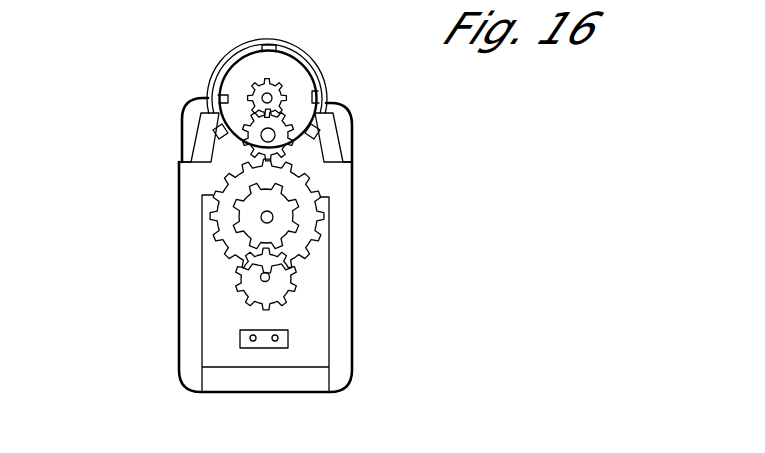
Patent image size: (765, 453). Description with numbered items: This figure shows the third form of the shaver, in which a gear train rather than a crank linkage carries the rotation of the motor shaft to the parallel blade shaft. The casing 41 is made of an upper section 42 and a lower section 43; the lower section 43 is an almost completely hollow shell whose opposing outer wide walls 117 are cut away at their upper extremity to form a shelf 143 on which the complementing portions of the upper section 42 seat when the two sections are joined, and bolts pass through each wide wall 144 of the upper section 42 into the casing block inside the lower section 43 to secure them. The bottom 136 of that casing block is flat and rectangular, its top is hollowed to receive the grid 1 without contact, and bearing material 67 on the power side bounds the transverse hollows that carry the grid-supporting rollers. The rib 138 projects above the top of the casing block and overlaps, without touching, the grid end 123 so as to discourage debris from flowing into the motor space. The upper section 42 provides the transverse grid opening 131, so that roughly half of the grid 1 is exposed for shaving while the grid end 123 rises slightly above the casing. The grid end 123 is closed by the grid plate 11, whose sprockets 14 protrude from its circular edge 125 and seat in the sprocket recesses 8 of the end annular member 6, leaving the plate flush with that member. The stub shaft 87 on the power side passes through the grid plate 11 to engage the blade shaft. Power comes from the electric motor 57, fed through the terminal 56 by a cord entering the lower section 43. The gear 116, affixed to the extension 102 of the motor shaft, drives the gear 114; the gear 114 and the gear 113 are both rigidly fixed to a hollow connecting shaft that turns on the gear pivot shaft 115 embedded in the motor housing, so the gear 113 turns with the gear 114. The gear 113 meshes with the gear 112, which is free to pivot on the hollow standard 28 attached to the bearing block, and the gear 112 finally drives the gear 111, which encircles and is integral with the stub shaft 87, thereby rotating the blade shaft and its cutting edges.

The grid 1 is at (318, 57).
The end annular member 6 is at (221, 66).
The sprocket recesses 8 is at (277, 46).
The grid plate 11 is at (281, 75).
The sprockets 14 is at (248, 94).
The hollow standard 28 is at (274, 130).
The casing 41 is at (170, 160).
The upper section 42 is at (184, 106).
The lower section 43 is at (353, 352).
The terminal 56 is at (282, 352).
The electric motor 57 is at (314, 350).
The bearing material 67 is at (219, 139).
The stub shaft 87 is at (294, 80).
The extension 102 is at (268, 280).
The gear 111 is at (276, 101).
The gear 112 is at (258, 150).
The gear 113 is at (278, 180).
The gear 114 is at (277, 206).
The gear pivot shaft 115 is at (272, 221).
The gear 116 is at (278, 270).
The outer wide walls 117 is at (178, 270).
The grid end 123 is at (328, 71).
The circular edge 125 is at (324, 88).
The transverse grid opening 131 is at (208, 98).
The bottom of the casing block 136 is at (329, 200).
The rib 138 is at (285, 140).
The shelf 143 is at (180, 165).
The wide wall 144 is at (181, 137).